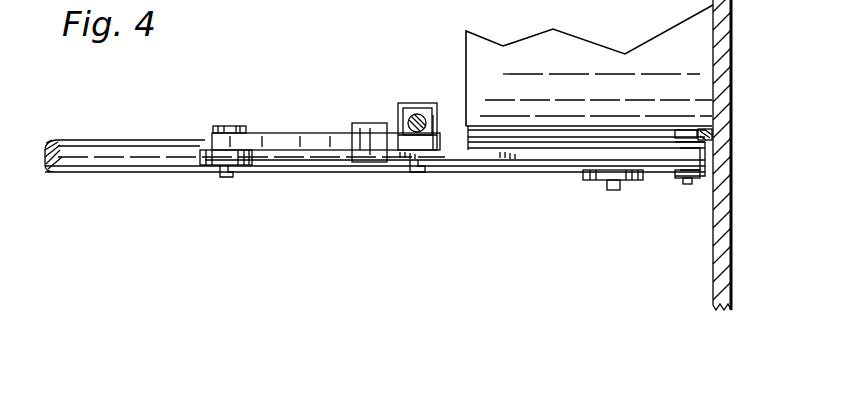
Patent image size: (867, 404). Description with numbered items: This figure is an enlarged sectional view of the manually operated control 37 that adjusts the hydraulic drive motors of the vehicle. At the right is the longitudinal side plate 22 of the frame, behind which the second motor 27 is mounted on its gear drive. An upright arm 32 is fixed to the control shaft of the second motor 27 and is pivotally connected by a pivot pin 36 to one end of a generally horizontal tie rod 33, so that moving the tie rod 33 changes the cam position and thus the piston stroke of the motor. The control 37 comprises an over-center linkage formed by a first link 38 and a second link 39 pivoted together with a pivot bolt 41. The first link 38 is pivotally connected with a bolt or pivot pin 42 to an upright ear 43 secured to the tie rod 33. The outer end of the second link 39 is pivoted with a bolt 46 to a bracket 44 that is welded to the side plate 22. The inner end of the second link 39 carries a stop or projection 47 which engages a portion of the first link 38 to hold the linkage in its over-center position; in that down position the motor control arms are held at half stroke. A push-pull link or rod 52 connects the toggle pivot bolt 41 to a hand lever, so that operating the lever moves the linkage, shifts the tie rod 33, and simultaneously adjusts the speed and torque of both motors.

The side plate 22 is at (733, 94).
The second motor 27 is at (561, 52).
The upright arm 32 is at (590, 185).
The tie rod 33 is at (95, 147).
The pivot pin 36 is at (612, 191).
The manually operated control 37 is at (303, 90).
The first link 38 is at (285, 140).
The second link 39 is at (535, 153).
The pivot bolt 41 is at (410, 175).
The pivot pin 42 is at (225, 178).
The upright ear 43 is at (205, 160).
The bracket 44 is at (705, 177).
The bolt 46 is at (683, 130).
The stop 47 is at (363, 124).
The push-pull rod 52 is at (426, 121).